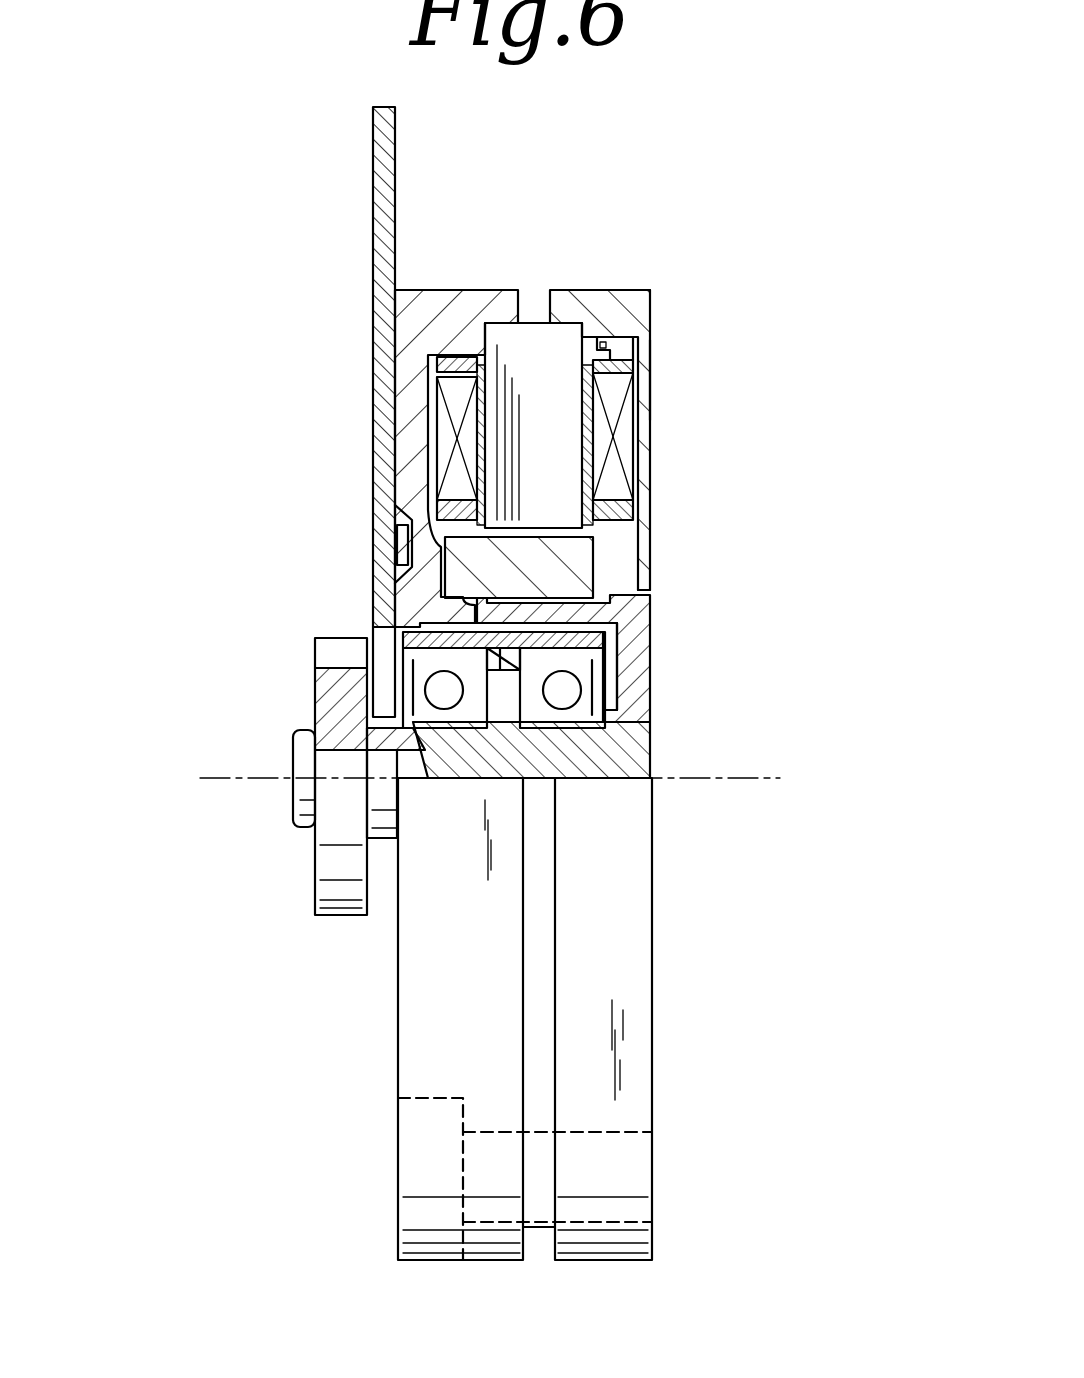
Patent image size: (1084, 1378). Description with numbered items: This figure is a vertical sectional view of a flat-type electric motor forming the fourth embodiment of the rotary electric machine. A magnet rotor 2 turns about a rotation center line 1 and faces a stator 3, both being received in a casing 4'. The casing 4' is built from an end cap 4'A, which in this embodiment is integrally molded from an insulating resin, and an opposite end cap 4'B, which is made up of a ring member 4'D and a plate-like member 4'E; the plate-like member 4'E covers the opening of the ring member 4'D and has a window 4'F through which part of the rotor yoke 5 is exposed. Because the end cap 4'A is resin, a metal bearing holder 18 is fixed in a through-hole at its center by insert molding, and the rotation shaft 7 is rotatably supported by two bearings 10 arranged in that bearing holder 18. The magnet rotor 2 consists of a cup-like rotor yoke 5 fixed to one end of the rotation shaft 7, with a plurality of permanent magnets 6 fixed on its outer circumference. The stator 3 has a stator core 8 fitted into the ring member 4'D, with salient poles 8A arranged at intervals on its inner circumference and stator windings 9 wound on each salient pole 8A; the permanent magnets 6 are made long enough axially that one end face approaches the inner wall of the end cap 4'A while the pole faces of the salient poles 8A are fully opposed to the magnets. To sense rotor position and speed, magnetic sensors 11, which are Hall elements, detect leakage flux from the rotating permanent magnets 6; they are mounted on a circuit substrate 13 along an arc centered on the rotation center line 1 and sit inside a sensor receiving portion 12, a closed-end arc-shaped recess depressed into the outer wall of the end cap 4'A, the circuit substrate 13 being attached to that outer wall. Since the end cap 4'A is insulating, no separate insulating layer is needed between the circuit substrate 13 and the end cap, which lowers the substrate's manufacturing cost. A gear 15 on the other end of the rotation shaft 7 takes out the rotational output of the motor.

The rotation center line 1 is at (232, 778).
The magnet rotor 2 is at (614, 572).
The stator 3 is at (622, 358).
The casing 4' is at (605, 395).
The end cap 4'A is at (456, 412).
The end cap 4'B is at (601, 391).
The ring member 4'D is at (673, 250).
The plate-like member 4'E is at (696, 379).
The window 4'F is at (727, 608).
The rotor yoke 5 is at (640, 643).
The permanent magnet 6 is at (583, 548).
The rotation shaft 7 is at (623, 770).
The stator core 8 is at (605, 375).
The salient poles 8A is at (560, 470).
The stator windings 9 is at (620, 420).
The bearings 10 is at (422, 662).
The magnetic sensors 11 is at (400, 545).
The sensor receiving portion 12 is at (393, 520).
The circuit substrate 13 is at (373, 155).
The gear 15 is at (320, 655).
The metal bearing holder 18 is at (600, 660).